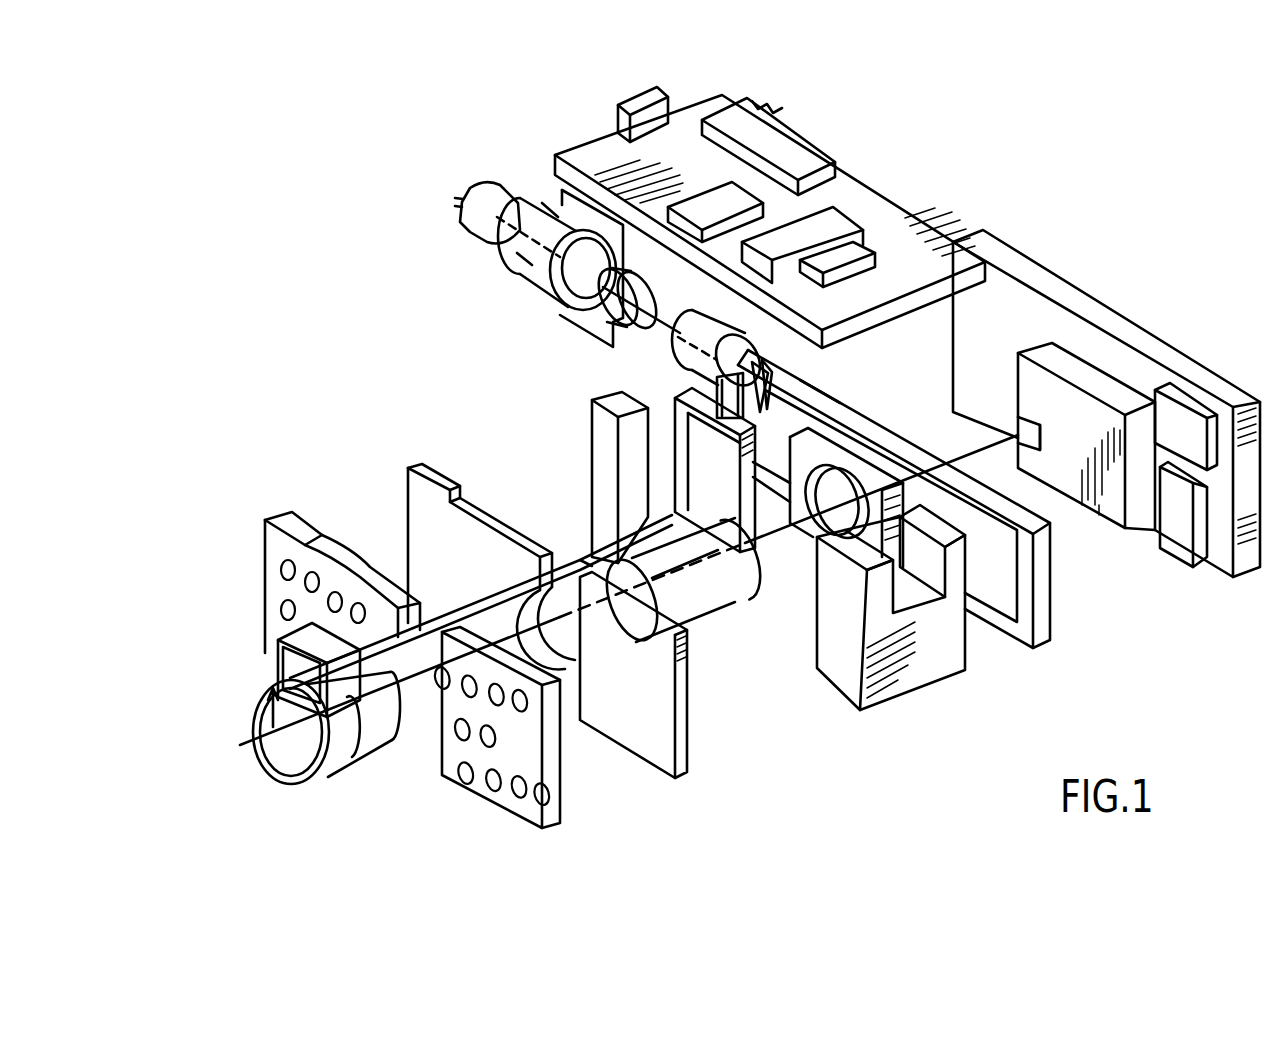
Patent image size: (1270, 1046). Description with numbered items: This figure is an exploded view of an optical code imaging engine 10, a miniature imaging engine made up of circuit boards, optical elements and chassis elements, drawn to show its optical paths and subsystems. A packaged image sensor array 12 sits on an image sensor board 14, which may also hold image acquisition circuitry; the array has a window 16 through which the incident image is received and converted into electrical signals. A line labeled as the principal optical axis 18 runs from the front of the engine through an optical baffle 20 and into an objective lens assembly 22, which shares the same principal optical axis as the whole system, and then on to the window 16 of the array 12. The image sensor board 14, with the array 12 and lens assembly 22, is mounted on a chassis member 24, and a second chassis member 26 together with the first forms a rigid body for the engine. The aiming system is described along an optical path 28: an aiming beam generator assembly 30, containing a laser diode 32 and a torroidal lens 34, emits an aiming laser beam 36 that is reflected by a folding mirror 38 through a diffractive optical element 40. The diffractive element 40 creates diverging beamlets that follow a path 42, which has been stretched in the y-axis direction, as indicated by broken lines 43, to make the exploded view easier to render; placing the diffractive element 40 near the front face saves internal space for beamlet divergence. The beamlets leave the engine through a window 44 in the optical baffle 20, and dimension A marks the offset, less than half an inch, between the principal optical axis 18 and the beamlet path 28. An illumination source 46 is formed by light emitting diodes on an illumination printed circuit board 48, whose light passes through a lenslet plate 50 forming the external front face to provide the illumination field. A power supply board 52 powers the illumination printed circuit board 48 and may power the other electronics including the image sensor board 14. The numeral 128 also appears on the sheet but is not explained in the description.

The optical code imaging engine 10 is at (937, 735).
The packaged image sensor array 12 is at (1130, 533).
The image sensor board 14 is at (1047, 265).
The window 16 is at (1022, 428).
The principal optical axis 18 is at (427, 645).
The optical baffle 20 is at (367, 750).
The objective lens assembly 22 is at (735, 553).
The chassis member 24 is at (1027, 642).
The second chassis member 26 is at (957, 677).
The optical path 28 is at (577, 557).
The aiming beam generator assembly 30 is at (522, 277).
The laser diode 32 is at (477, 242).
The torroidal lens 34 is at (645, 275).
The aiming laser beam 36 is at (655, 327).
The folding mirror 38 is at (822, 383).
The diffractive optical element 40 is at (837, 389).
The path 42 is at (660, 513).
The broken lines 43 is at (690, 440).
The window 44 is at (273, 663).
The illumination source 46 is at (420, 446).
The illumination printed circuit board 48 is at (683, 733).
The lenslet plate 50 is at (560, 777).
The power supply board 52 is at (870, 187).
The slot 128 is at (802, 623).